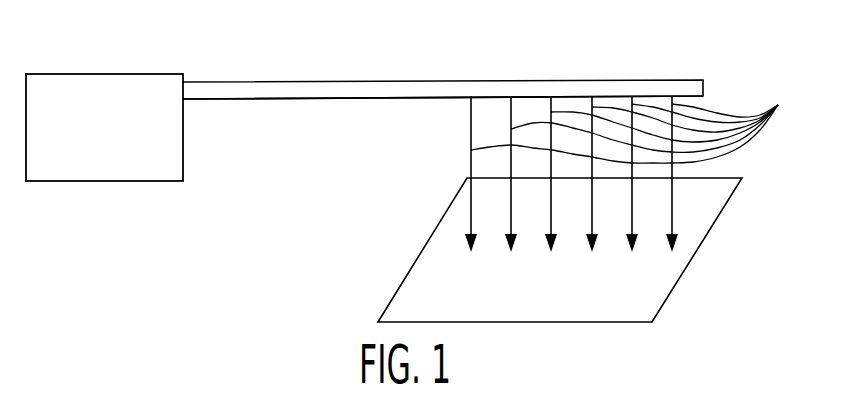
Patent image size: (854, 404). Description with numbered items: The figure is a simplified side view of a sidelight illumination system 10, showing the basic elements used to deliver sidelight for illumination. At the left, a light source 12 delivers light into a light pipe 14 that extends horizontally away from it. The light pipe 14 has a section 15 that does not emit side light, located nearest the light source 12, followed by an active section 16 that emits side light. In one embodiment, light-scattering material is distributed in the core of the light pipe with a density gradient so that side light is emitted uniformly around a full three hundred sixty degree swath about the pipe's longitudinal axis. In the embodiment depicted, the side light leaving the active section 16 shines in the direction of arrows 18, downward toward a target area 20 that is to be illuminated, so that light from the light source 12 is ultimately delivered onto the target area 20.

The sidelight illumination system 10 is at (391, 35).
The light source 12 is at (117, 139).
The light pipe 14 is at (307, 68).
The section 15 is at (330, 97).
The active section 16 is at (460, 63).
The arrows 18 is at (630, 120).
The target area 20 is at (564, 295).